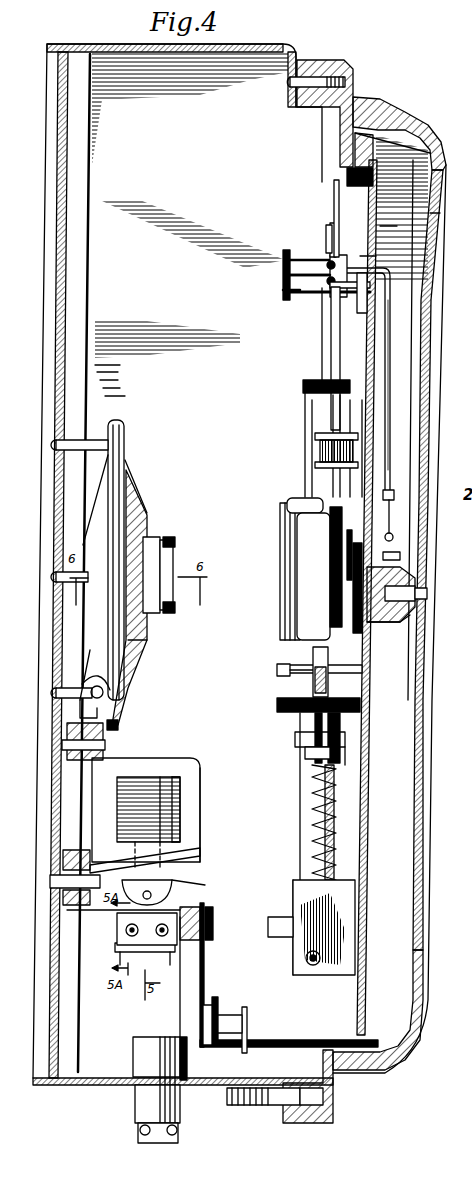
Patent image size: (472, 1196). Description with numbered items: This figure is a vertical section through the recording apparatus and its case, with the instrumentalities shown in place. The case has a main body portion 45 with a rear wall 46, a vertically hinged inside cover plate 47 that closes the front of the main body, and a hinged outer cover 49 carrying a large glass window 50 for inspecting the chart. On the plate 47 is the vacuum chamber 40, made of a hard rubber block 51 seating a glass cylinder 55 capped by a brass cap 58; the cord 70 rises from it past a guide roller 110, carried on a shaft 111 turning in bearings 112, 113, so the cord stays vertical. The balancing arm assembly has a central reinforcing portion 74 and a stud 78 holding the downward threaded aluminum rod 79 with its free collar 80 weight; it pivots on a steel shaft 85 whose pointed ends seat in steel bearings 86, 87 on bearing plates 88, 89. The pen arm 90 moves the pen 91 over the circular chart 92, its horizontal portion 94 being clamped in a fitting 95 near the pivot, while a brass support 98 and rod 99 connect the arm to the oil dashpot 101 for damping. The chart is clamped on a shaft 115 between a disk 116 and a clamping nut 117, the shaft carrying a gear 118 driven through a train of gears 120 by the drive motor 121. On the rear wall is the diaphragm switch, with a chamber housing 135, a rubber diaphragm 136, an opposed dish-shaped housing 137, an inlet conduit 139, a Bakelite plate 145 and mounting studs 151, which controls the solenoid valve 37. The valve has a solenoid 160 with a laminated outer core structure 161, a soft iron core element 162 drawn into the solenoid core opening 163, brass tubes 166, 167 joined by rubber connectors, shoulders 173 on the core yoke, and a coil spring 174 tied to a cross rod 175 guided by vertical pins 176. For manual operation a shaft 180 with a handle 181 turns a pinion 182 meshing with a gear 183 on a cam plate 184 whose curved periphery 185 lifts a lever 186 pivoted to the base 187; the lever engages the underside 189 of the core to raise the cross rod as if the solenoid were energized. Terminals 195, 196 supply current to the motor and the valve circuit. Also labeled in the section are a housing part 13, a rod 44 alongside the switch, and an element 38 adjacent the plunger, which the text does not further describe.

The housing part 13 is at (441, 213).
The solenoid valve 37 is at (207, 764).
The plunger rod 38 is at (315, 753).
The vacuum chamber 40 is at (348, 895).
The operating rod 44 is at (126, 463).
The main body portion 45 is at (243, 48).
The rear wall 46 is at (67, 188).
The inside cover plate 47 is at (356, 167).
The outer cover 49 is at (385, 128).
The glass window 50 is at (428, 690).
The hard rubber block 51 is at (293, 880).
The glass cylinder 55 is at (300, 801).
The brass cap 58 is at (340, 727).
The cord 70 is at (283, 640).
The central reinforcing portion 74 is at (318, 296).
The stud 78 is at (333, 308).
The threaded aluminum rod 79 is at (330, 370).
The free collar 80 is at (322, 452).
The steel shaft 85 is at (290, 290).
The steel bearing 86 is at (290, 274).
The steel bearing 87 is at (376, 272).
The bearing plate 88 is at (287, 257).
The bearing plate 89 is at (397, 226).
The pen arm 90 is at (392, 338).
The pen 91 is at (400, 556).
The circular chart 92 is at (370, 754).
The horizontal portion 94 is at (376, 256).
The fitting 95 is at (330, 250).
The brass support 98 is at (332, 225).
The rod 99 is at (322, 352).
The oil dashpot 101 is at (308, 415).
The guide roller 110 is at (320, 690).
The shaft 111 is at (300, 685).
The bearing 112 is at (280, 668).
The bearing 113 is at (375, 663).
The shaft 115 is at (416, 596).
The disk 116 is at (388, 624).
The clamping nut 117 is at (403, 572).
The gear 118 is at (340, 592).
The train of gears 120 is at (352, 537).
The drive motor 121 is at (279, 588).
The chamber housing 135 is at (140, 643).
The rubber diaphragm 136 is at (125, 686).
The dish-shaped housing 137 is at (130, 490).
The inlet conduit 139 is at (103, 675).
The Bakelite plate 145 is at (150, 537).
The mounting studs 151 is at (170, 540).
The solenoid 160 is at (180, 790).
The laminated outer core structure 161 is at (167, 760).
The soft iron core element 162 is at (180, 877).
The solenoid core opening 163 is at (140, 787).
The brass tubes 166 is at (162, 977).
The brass tubes 167 is at (122, 935).
The shoulders 173 is at (177, 888).
The coil spring 174 is at (200, 897).
The cross rod 175 is at (128, 968).
The vertical pins 176 is at (183, 957).
The shaft 180 is at (277, 1048).
The handle 181 is at (378, 1070).
The pinion 182 is at (223, 1033).
The gear 183 is at (218, 997).
The cam plate 184 is at (207, 948).
The curved periphery 185 is at (203, 920).
The lever 186 is at (160, 866).
The base 187 is at (78, 787).
The underside of the solenoid core 189 is at (163, 853).
The terminal 195 is at (137, 1065).
The terminal 196 is at (183, 1065).